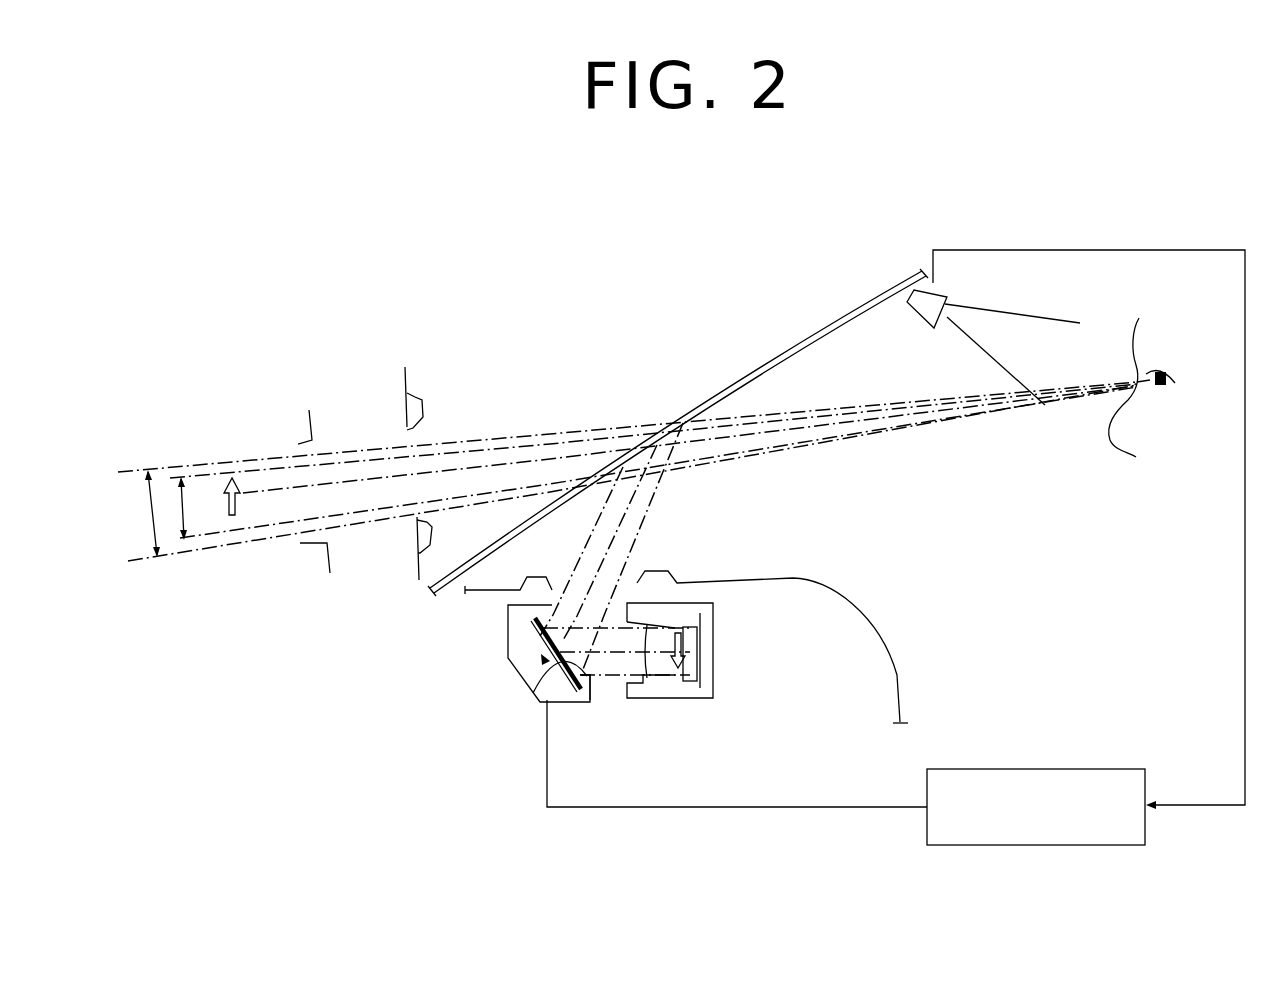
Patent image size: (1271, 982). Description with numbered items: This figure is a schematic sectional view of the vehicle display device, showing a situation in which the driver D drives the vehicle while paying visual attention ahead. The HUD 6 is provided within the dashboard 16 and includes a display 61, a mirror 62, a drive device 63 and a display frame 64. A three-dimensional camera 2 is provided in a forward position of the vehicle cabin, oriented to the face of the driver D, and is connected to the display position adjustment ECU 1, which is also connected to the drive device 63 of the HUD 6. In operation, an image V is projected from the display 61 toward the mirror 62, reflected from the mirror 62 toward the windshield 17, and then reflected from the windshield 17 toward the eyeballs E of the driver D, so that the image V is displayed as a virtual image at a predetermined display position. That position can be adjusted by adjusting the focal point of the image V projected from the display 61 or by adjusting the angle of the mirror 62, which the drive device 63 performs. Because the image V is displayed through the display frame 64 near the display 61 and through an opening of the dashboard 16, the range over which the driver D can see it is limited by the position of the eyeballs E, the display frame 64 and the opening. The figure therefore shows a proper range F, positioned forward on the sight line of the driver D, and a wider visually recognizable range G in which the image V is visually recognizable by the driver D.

The display position adjustment ECU 1 is at (1107, 768).
The 3D camera 2 is at (921, 305).
The HUD 6 is at (506, 672).
The dashboard 16 is at (748, 577).
The windshield 17 is at (789, 353).
The display 61 is at (690, 689).
The mirror 62 is at (592, 678).
The drive device 63 is at (548, 680).
The display frame 64 is at (644, 680).
The driver D is at (1174, 330).
The eyeballs E is at (1161, 387).
The visually recognizable range G is at (148, 490).
The proper range F is at (183, 496).
The image V is at (229, 500).